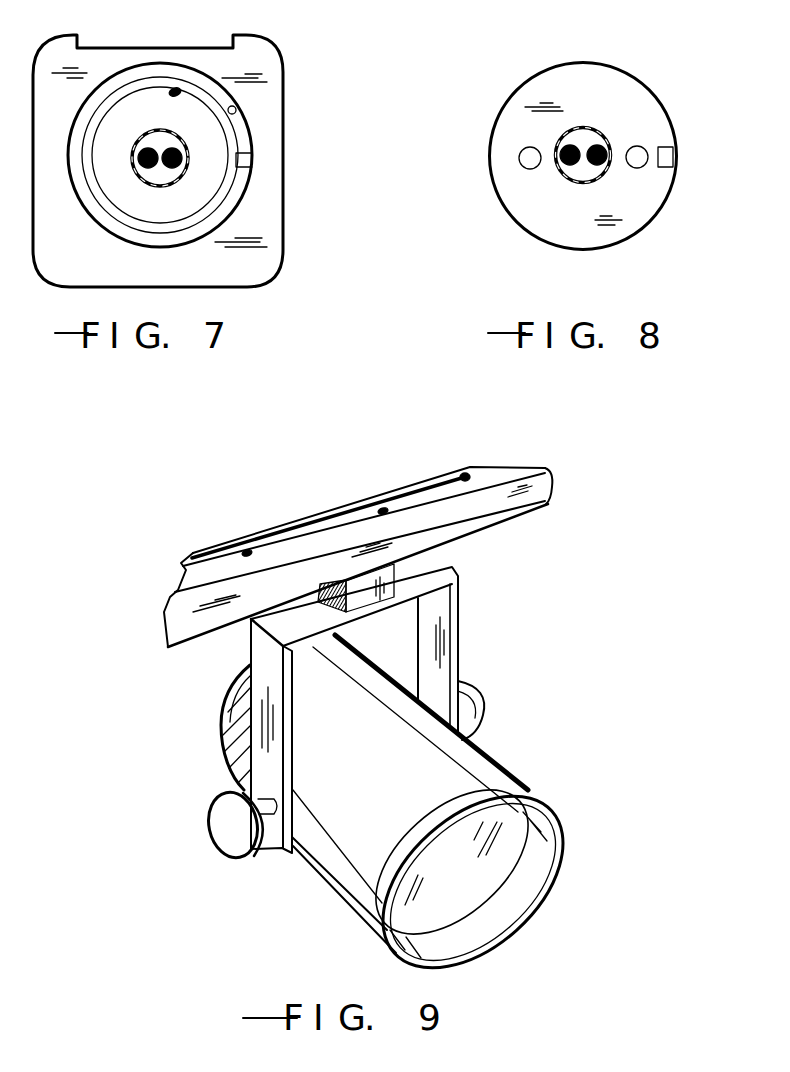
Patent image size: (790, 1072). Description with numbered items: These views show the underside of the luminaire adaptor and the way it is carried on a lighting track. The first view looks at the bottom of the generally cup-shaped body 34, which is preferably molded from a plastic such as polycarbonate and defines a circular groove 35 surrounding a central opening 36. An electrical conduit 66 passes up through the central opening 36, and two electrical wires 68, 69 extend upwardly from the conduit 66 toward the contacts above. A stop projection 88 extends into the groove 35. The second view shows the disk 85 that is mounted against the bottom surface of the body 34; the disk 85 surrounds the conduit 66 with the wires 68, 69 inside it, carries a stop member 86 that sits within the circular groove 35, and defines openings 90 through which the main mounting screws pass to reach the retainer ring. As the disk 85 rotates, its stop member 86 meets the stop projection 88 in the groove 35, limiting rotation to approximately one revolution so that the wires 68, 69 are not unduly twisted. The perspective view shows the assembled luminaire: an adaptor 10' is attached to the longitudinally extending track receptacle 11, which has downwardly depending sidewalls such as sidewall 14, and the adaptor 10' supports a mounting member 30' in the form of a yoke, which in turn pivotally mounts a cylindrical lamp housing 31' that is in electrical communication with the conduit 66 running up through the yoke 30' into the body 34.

In FIG. 7, the body 34 is at (286, 212).
In FIG. 7, the central opening 36 is at (168, 88).
In FIG. 7, the circular groove 35 is at (236, 111).
In FIG. 7, the stop projection 88 is at (250, 168).
In FIG. 7, the electrical conduit 66 is at (140, 182).
In FIG. 8, the electrical conduit 66 is at (574, 182).
In FIG. 7, the electrical wire 68 is at (153, 146).
In FIG. 8, the electrical wire 68 is at (603, 134).
In FIG. 7, the electrical wire 69 is at (171, 147).
In FIG. 8, the electrical wire 69 is at (580, 130).
In FIG. 8, the disk 85 is at (494, 188).
In FIG. 8, the openings 90 is at (530, 147).
In FIG. 8, the stop member 86 is at (675, 140).
In FIG. 9, the track receptacle 11 is at (328, 503).
In FIG. 9, the sidewall 14 is at (344, 517).
In FIG. 9, the adaptor 10' is at (419, 576).
In FIG. 9, the mounting member 30' is at (371, 714).
In FIG. 9, the lamp housing 31' is at (408, 818).